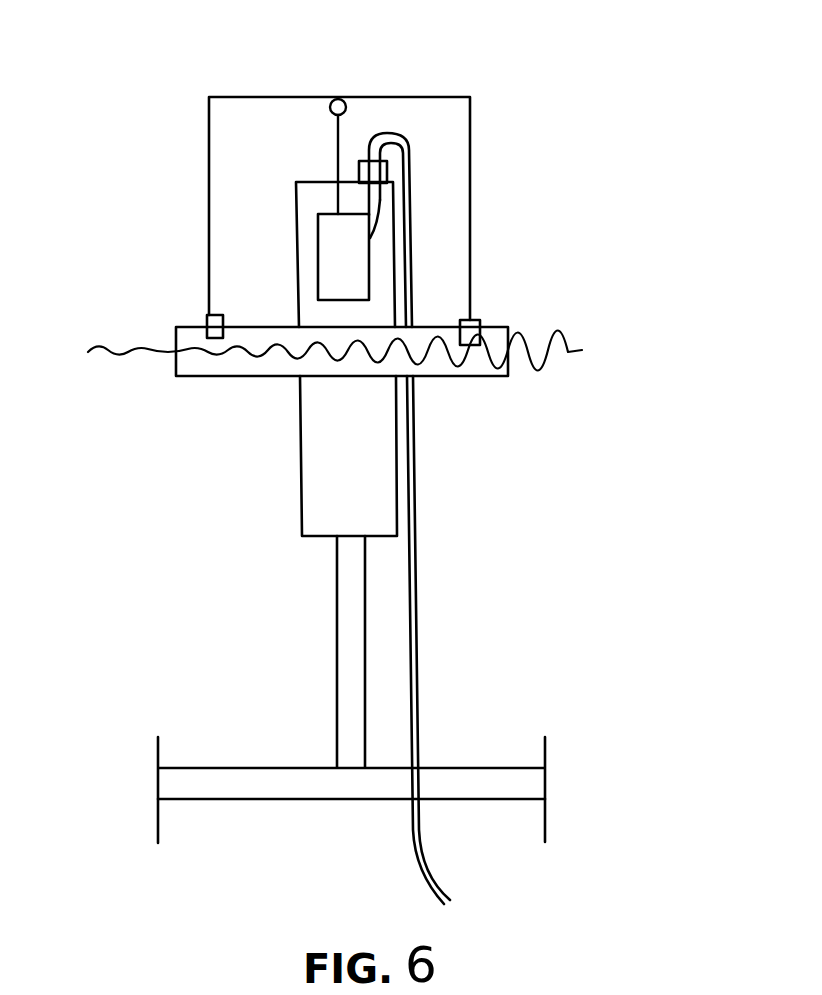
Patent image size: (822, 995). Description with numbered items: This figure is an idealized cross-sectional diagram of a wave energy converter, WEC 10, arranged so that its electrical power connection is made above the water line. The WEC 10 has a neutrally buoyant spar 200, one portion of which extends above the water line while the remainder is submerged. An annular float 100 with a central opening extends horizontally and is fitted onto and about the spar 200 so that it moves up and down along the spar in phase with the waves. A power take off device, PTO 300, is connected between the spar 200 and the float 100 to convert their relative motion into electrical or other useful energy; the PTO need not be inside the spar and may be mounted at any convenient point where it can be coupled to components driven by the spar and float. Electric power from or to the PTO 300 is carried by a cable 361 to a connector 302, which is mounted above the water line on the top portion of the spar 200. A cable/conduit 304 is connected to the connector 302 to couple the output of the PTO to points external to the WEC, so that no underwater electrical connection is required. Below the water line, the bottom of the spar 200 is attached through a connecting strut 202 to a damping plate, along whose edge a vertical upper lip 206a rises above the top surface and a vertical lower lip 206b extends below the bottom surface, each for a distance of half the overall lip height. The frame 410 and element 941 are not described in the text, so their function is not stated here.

The WEC 10 is at (643, 48).
The pivot / hanger 941 is at (332, 98).
The frame 410 is at (405, 96).
The connector 302 is at (393, 170).
The cable 361 is at (375, 201).
The cable/conduit 304 is at (408, 273).
The PTO 300 is at (335, 250).
The float 100 is at (176, 326).
The spar 200 is at (312, 440).
The connecting strut 202 is at (343, 637).
The upper lip 206a is at (157, 748).
The lower lip 206b is at (157, 827).